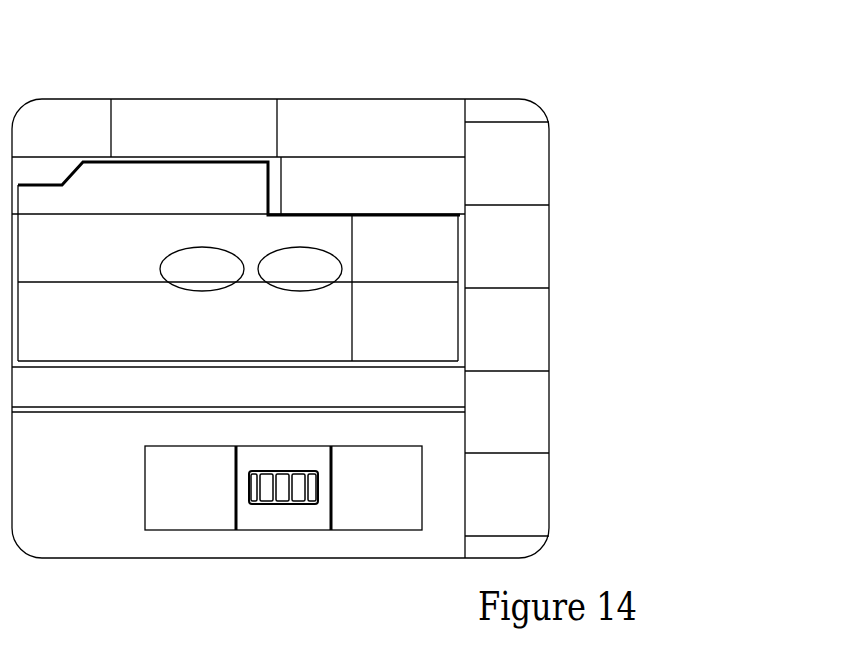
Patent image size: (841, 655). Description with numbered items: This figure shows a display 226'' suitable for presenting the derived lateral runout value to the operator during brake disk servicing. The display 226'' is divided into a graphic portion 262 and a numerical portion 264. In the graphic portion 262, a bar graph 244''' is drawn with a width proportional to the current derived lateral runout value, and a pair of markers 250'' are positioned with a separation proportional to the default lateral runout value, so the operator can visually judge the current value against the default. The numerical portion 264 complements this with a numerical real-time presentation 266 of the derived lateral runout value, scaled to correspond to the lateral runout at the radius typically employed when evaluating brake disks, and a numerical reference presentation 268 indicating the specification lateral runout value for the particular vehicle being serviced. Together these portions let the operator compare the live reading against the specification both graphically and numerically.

The display 226'' is at (367, 328).
The graphic portion 262 is at (146, 556).
The numerical portion 264 is at (250, 206).
The numerical real-time presentation 266 is at (330, 254).
The numerical reference presentation 268 is at (184, 249).
The markers 250'' is at (331, 530).
The bar graph 244''' is at (233, 536).